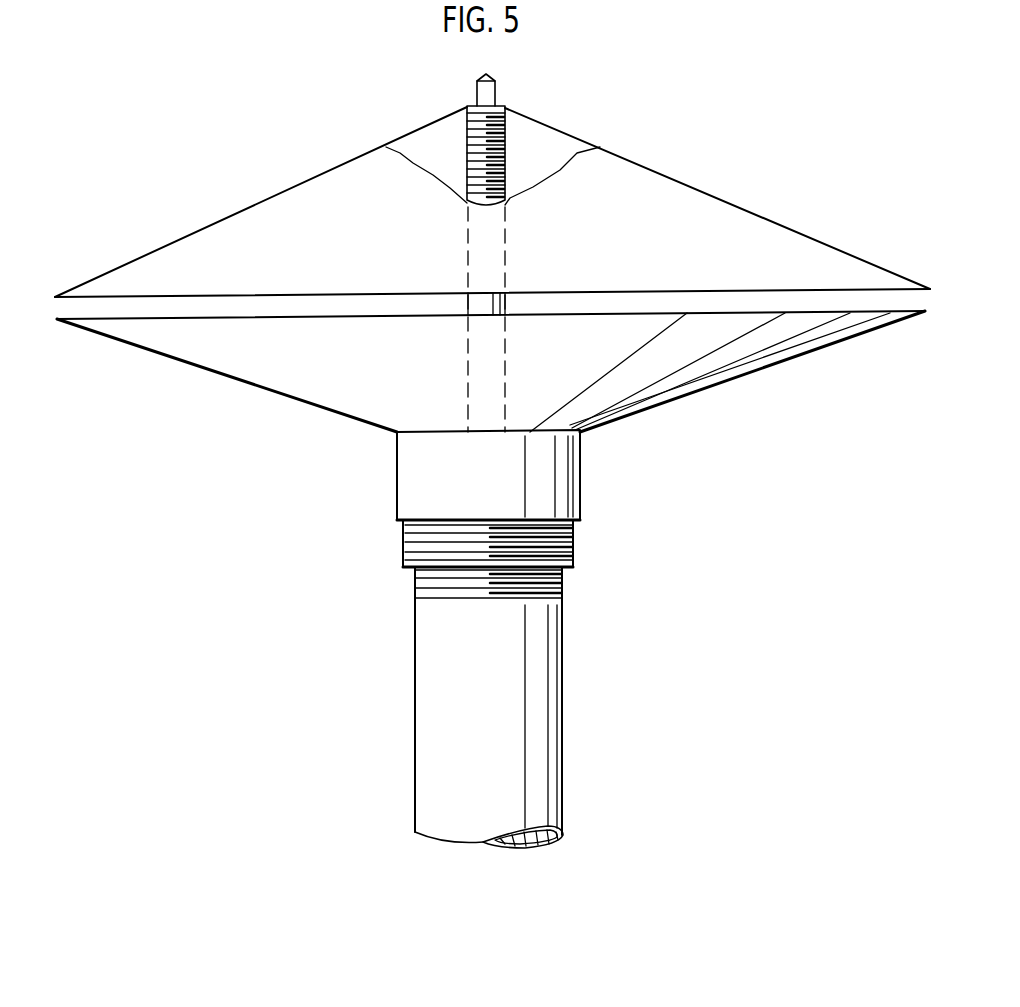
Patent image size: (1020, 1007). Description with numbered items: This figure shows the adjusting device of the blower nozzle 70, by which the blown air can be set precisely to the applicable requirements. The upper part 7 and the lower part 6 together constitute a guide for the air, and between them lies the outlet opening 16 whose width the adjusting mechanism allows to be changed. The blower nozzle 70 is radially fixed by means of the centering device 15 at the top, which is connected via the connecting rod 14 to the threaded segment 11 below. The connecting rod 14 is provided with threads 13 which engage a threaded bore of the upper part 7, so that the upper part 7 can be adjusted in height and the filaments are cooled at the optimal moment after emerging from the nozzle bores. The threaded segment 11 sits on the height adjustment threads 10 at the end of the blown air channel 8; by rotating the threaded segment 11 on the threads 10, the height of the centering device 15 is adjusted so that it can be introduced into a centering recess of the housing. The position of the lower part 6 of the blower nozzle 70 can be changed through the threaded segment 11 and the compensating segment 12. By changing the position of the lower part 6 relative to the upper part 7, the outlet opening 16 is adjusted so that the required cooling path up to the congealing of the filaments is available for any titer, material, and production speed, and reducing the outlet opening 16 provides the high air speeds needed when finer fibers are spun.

The blower nozzle 70 is at (154, 398).
The upper part 7 is at (707, 226).
The outlet opening 16 is at (57, 306).
The lower part 6 is at (670, 360).
The connecting rod 14 is at (470, 302).
The threads 13 is at (508, 133).
The centering device 15 is at (487, 94).
The compensating segment 12 is at (415, 468).
The threaded segment 11 is at (415, 537).
The height adjustment threads 10 is at (420, 598).
The blown air channel 8 is at (513, 790).